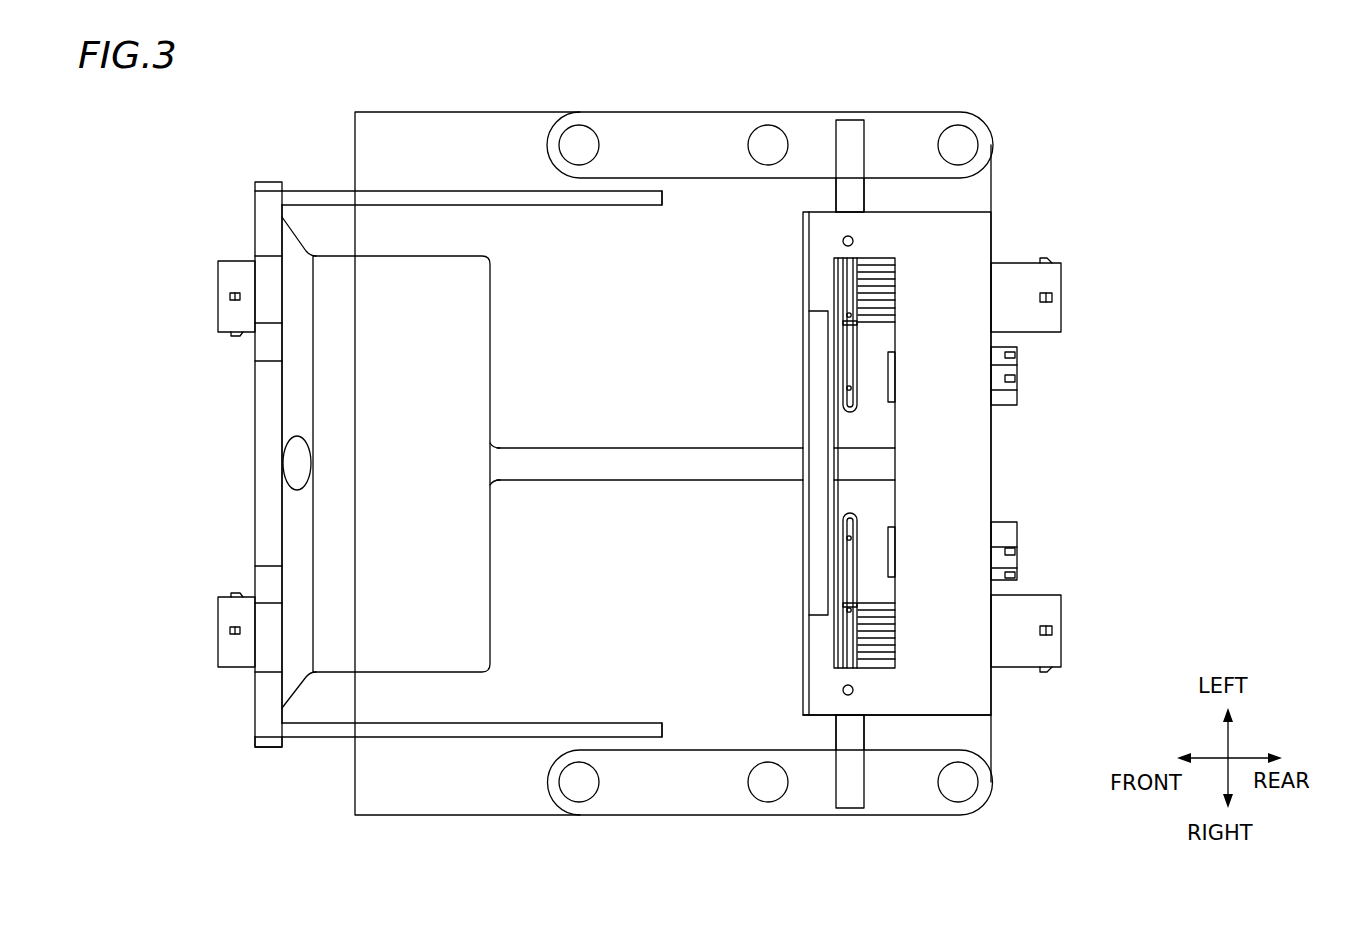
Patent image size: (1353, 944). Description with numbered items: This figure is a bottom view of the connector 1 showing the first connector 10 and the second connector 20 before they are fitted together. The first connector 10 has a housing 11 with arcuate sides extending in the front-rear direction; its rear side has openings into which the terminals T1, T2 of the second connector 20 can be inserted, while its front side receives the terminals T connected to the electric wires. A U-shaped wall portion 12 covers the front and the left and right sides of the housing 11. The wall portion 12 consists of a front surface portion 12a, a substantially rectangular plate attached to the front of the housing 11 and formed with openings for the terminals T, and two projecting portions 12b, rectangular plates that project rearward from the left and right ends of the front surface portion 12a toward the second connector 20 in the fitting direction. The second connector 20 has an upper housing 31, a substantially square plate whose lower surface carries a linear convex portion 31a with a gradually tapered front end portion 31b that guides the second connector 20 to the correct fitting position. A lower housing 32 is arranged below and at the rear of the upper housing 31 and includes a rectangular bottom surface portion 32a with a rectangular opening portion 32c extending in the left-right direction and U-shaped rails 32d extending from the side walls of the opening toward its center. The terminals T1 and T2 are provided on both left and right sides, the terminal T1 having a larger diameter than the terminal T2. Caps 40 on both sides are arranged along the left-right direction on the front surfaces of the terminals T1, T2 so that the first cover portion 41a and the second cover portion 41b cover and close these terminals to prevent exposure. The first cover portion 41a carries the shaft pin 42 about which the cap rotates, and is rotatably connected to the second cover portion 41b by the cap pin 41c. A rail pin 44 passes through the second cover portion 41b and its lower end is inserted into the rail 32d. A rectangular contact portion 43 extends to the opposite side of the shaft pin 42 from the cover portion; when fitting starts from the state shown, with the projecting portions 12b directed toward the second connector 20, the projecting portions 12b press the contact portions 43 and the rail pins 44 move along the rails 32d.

The connector 1 is at (266, 139).
The first connector 10 is at (238, 446).
The housing 11 is at (477, 612).
The wall portion 12 is at (306, 191).
The front surface portion 12a is at (262, 715).
The projecting portions 12b is at (621, 203).
The second connector 20 is at (1008, 137).
The upper housing 31 is at (434, 125).
The convex portion 31a is at (611, 458).
The front end portion 31b is at (499, 446).
The lower housing 32 is at (975, 225).
The bottom surface portion 32a is at (975, 693).
The opening portion 32c is at (893, 505).
The rails 32d is at (858, 335).
The caps 40 is at (852, 130).
The first cover portion 41a is at (850, 283).
The second cover portion 41b is at (850, 360).
The cap pin 41c is at (849, 316).
The shaft pin 42 is at (856, 241).
The contact portion 43 is at (857, 196).
The rail pin 44 is at (849, 390).
The terminals T is at (228, 277).
The terminal T1 is at (1048, 277).
The terminal T2 is at (1010, 400).